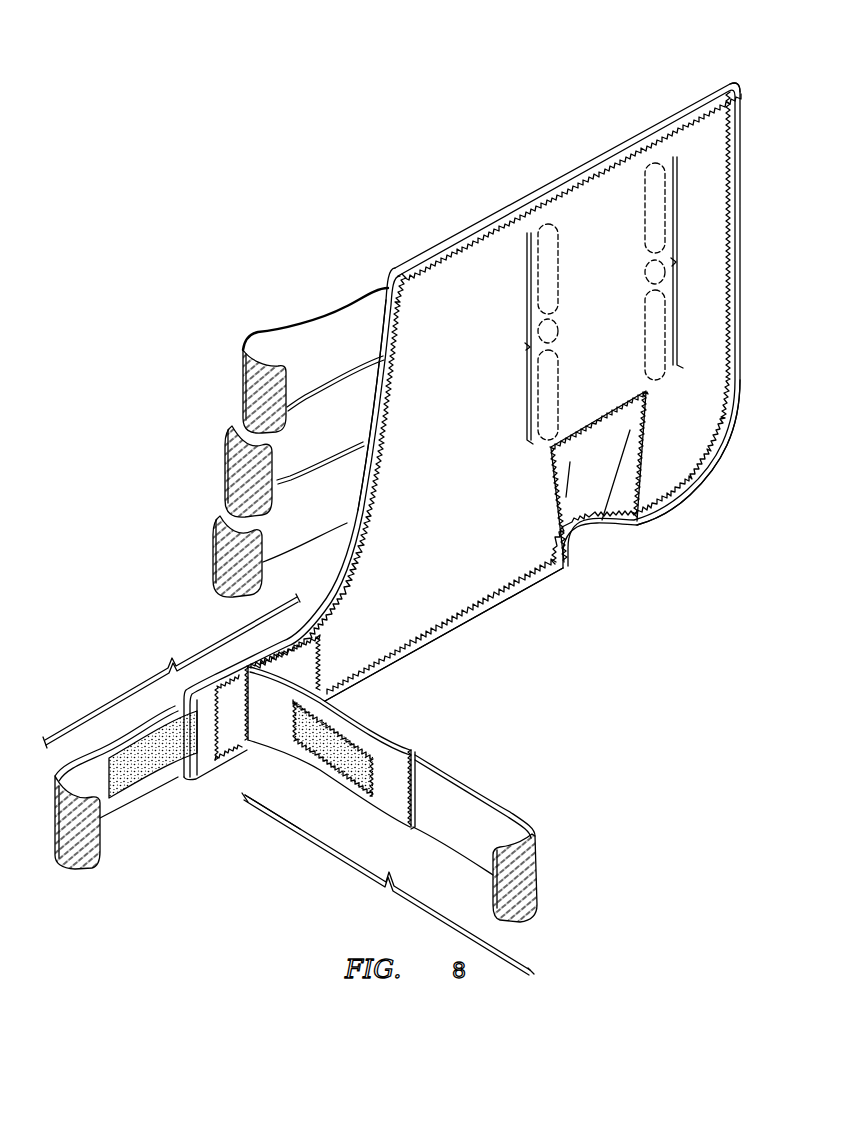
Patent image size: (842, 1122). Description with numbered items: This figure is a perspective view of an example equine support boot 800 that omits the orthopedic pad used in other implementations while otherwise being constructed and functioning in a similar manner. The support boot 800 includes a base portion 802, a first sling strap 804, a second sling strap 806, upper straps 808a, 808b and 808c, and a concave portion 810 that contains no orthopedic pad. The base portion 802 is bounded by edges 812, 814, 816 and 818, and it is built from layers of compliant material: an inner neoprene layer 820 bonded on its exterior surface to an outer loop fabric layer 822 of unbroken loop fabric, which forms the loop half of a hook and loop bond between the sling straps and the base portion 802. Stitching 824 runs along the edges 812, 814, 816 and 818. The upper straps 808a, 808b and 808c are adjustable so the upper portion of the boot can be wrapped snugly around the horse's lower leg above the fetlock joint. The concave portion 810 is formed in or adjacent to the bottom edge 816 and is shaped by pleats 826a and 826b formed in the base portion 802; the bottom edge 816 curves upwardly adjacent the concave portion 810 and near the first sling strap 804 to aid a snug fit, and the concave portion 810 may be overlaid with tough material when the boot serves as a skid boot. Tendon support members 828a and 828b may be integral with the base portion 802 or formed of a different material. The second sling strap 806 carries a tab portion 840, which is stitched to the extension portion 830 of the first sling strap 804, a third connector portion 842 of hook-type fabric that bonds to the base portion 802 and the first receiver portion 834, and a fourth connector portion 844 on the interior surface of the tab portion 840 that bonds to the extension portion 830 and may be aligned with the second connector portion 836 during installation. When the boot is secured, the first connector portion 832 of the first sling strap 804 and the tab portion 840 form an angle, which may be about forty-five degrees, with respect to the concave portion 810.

The support boot 800 is at (366, 175).
The base portion 802 is at (620, 238).
The first sling strap 804 is at (171, 671).
The second sling strap 806 is at (388, 884).
The upper strap 808a is at (237, 377).
The upper strap 808b is at (225, 460).
The upper strap 808c is at (212, 545).
The concave portion 810 is at (597, 390).
The edge 812 is at (490, 212).
The edge 814 is at (746, 98).
The bottom edge 816 is at (477, 623).
The edge 818 is at (400, 441).
The inner neoprene layer 820 is at (560, 180).
The outer loop fabric layer 822 is at (660, 483).
The stitching 824 is at (447, 250).
The pleat 826a is at (560, 497).
The pleat 826b is at (628, 440).
The tendon support member 828a is at (514, 334).
The tendon support member 828b is at (685, 268).
The extension portion 830 is at (207, 773).
The first connector portion 832 is at (65, 863).
The first receiver portion 834 is at (123, 793).
The second connector portion 836 is at (320, 640).
The tab portion 840 is at (381, 836).
The third connector portion 842 is at (447, 850).
The fourth connector portion 844 is at (272, 812).